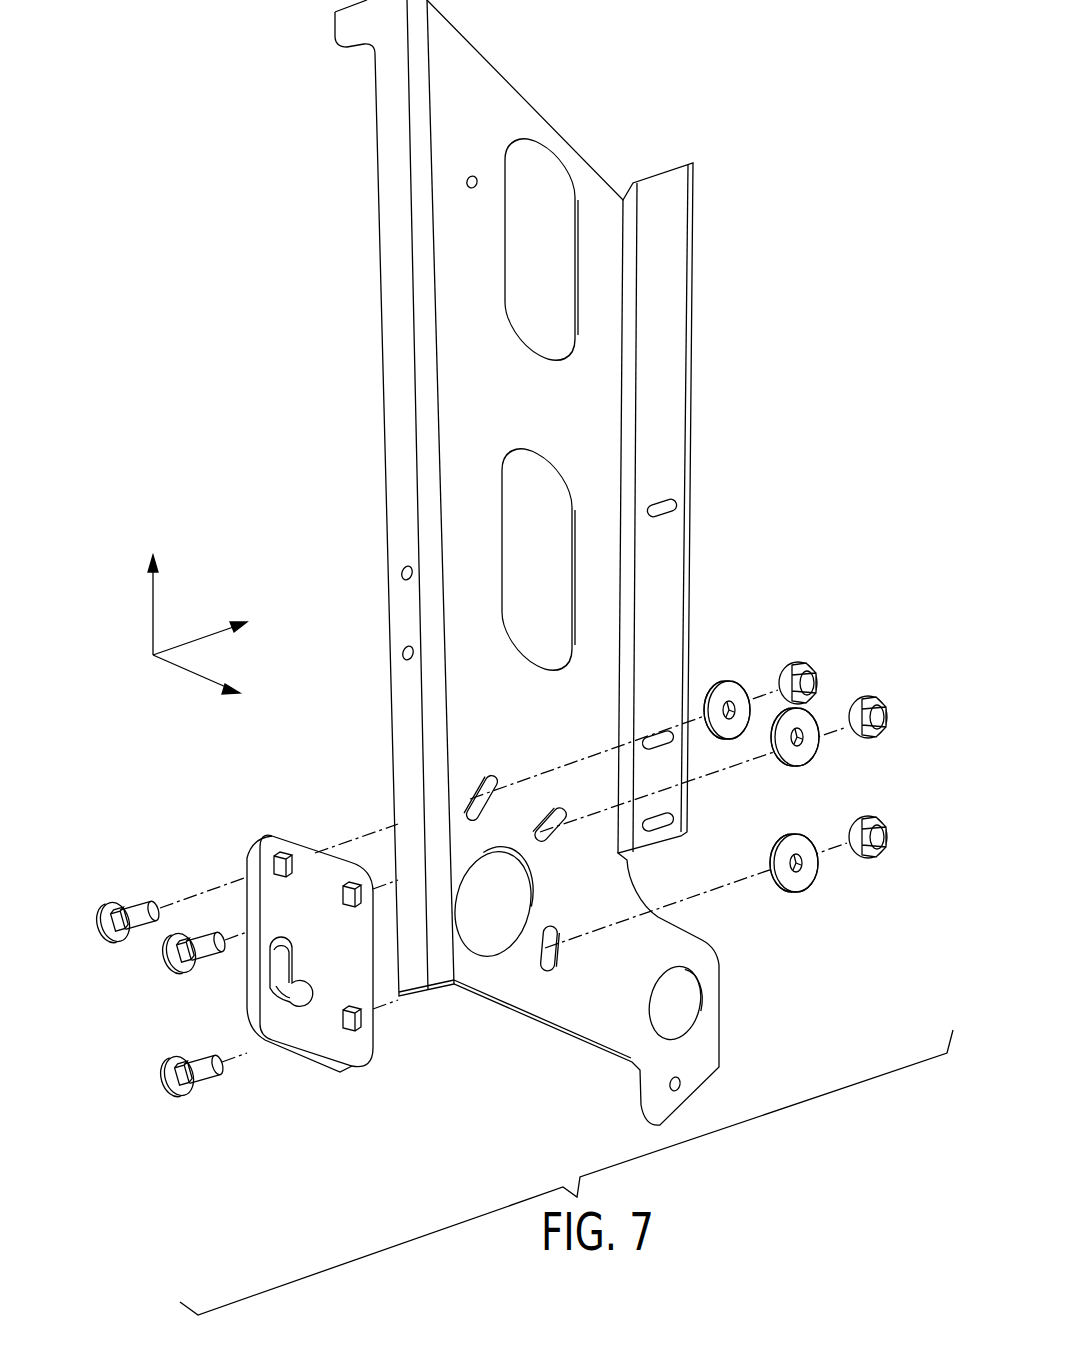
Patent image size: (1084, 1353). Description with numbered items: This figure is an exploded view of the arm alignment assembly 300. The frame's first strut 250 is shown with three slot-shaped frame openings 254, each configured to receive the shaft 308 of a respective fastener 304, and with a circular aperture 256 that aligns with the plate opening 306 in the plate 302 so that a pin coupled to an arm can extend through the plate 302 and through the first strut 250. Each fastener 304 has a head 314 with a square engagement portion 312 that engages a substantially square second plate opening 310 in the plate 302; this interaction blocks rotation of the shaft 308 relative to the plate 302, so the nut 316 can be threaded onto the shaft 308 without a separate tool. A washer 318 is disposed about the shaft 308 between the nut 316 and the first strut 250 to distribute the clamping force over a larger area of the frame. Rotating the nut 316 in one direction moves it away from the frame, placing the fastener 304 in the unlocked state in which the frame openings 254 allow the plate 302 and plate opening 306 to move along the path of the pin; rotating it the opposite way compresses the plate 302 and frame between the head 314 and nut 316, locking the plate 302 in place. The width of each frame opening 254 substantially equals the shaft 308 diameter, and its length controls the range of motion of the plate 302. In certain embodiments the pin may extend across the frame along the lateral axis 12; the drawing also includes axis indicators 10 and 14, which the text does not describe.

The longitudinal direction 10 is at (192, 675).
The lateral axis 12 is at (207, 637).
The vertical direction 14 is at (153, 612).
The first strut 250 is at (670, 565).
The frame opening 254 is at (552, 817).
The aperture 256 is at (495, 935).
The arm alignment assembly 300 is at (787, 623).
The plate 302 is at (300, 845).
The fastener 304 is at (147, 1002).
The plate opening 306 is at (288, 1005).
The shaft 308 is at (162, 950).
The second plate opening 310 is at (282, 878).
The engagement portion 312 is at (110, 908).
The head 314 is at (101, 917).
The nut 316 is at (823, 677).
The washer 318 is at (720, 688).